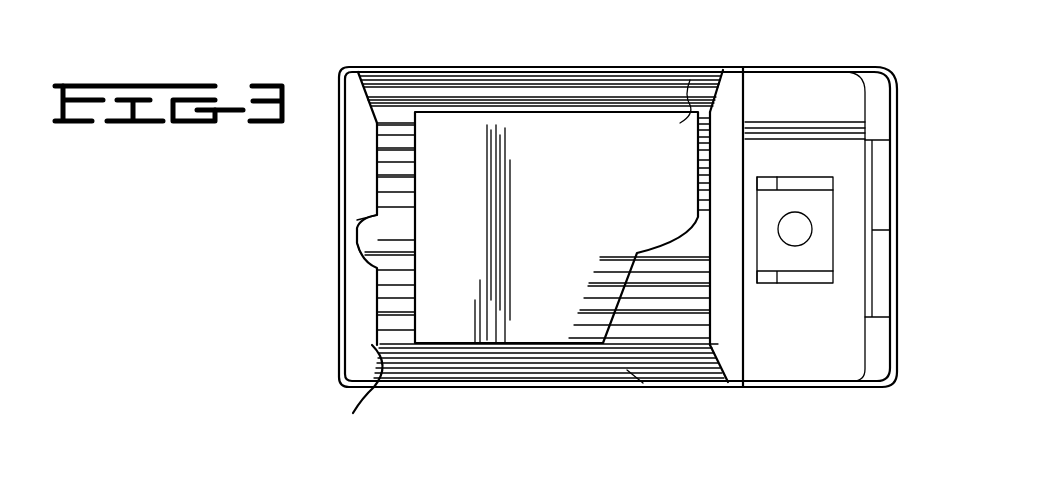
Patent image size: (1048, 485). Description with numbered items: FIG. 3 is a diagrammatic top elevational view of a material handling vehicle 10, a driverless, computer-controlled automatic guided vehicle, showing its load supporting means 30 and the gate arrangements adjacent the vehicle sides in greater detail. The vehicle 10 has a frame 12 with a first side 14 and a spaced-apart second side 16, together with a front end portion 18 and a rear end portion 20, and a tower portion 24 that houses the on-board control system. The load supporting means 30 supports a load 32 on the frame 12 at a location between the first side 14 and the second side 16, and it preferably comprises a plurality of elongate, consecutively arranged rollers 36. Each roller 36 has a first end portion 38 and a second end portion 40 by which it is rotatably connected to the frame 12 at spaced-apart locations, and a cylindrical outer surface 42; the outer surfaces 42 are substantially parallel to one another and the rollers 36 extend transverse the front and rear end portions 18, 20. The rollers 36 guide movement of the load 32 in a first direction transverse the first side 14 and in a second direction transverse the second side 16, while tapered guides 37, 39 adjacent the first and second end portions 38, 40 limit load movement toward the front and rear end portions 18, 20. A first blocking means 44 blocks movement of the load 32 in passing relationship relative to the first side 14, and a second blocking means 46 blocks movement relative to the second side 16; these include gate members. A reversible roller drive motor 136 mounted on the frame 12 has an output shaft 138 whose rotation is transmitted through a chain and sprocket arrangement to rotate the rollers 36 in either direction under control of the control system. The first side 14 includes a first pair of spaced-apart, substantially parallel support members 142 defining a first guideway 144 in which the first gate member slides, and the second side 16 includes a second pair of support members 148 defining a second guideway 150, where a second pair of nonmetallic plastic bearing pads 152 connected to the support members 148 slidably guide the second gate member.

The material handling vehicle 10 is at (928, 147).
The frame 12 is at (803, 391).
The first side 14 is at (500, 383).
The second side 16 is at (842, 68).
The front end portion 18 is at (898, 213).
The rear end portion 20 is at (341, 308).
The tower portion 24 is at (883, 275).
The load supporting means 30 is at (379, 283).
The load 32 is at (562, 236).
The rollers 36 is at (387, 207).
The tapered guide 37 is at (700, 170).
The first end portion 38 is at (707, 142).
The tapered guide 39 is at (359, 394).
The second end portion 40 is at (380, 333).
The cylindrical outer surface 42 is at (543, 99).
The first blocking means 44 is at (453, 380).
The second blocking means 46 is at (608, 81).
The roller drive motor 136 is at (357, 220).
The output shaft 138 is at (357, 243).
The first pair of support members 142 is at (690, 380).
The first guideway 144 is at (643, 383).
The second pair of support members 148 is at (406, 79).
The second guideway 150 is at (720, 87).
The second pair of bearing pads 152 is at (663, 109).